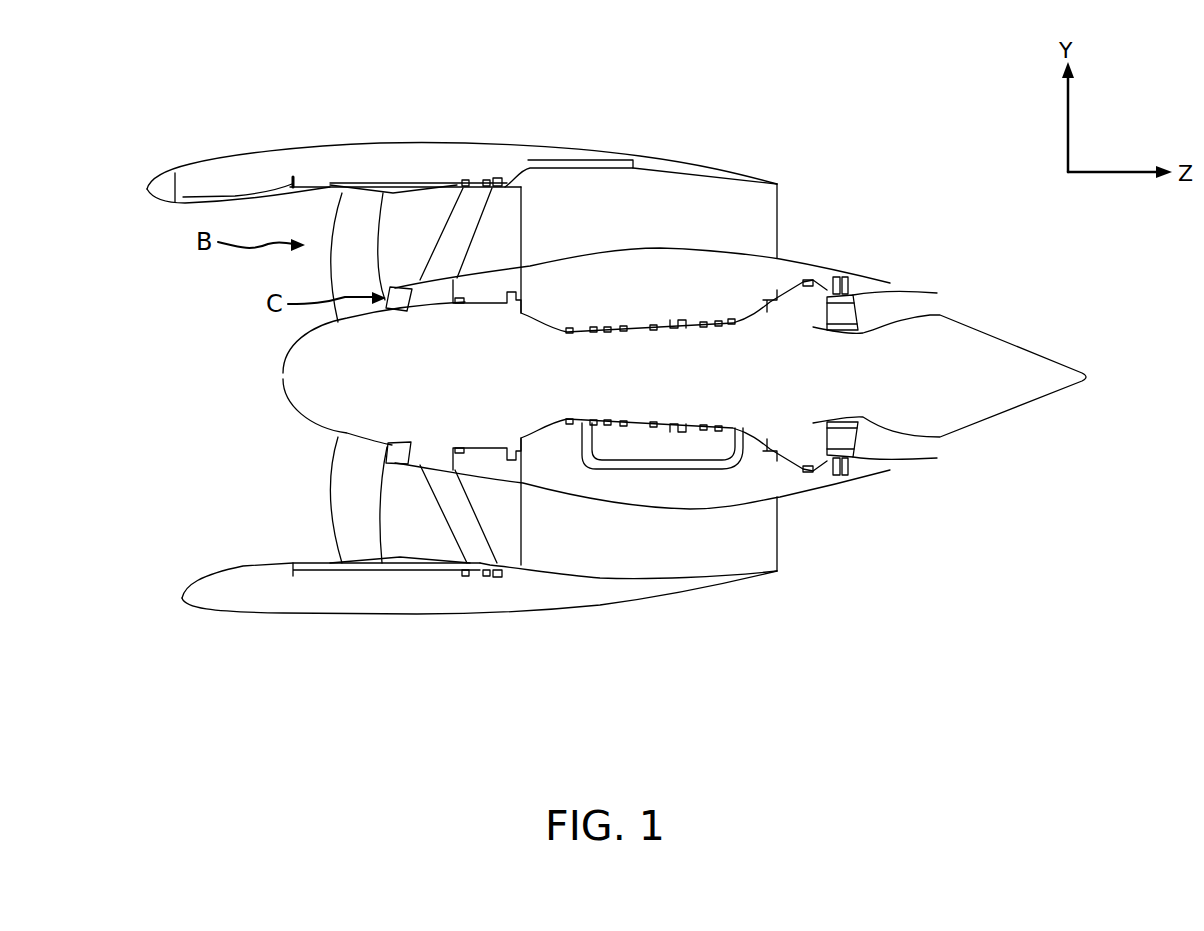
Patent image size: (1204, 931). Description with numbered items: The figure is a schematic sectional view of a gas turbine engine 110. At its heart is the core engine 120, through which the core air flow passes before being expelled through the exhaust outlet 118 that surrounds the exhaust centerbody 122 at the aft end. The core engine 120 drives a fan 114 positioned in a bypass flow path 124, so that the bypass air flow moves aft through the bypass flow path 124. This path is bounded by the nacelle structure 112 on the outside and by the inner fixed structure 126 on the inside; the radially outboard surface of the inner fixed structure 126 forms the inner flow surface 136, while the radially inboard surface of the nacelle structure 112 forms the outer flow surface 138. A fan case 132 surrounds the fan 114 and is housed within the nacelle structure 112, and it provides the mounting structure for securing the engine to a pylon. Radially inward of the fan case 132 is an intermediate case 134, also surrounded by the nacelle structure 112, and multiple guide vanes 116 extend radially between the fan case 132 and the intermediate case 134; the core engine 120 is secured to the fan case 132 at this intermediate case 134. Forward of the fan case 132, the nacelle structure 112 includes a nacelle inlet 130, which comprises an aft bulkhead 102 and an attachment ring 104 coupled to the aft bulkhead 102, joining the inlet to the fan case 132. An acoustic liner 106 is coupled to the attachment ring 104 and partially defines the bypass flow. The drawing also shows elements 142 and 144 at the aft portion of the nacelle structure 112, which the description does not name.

The aft bulkhead 102 is at (290, 178).
The attachment ring 104 is at (296, 176).
The acoustic liner 106 is at (235, 195).
The gas turbine engine 110 is at (787, 95).
The nacelle structure 112 is at (377, 130).
The fan 114 is at (333, 487).
The guide vanes 116 is at (464, 533).
The exhaust outlet 118 is at (934, 307).
The core engine 120 is at (664, 312).
The exhaust centerbody 122 is at (980, 410).
The bypass flow path 124 is at (679, 546).
The inner fixed structure 126 is at (660, 242).
The nacelle inlet 130 is at (204, 161).
The fan case 132 is at (322, 571).
The intermediate case 134 is at (480, 573).
The inner flow surface 136 is at (567, 493).
The outer flow surface 138 is at (588, 577).
The translating cowl 142 is at (755, 556).
The translating sleeve 144 is at (788, 207).